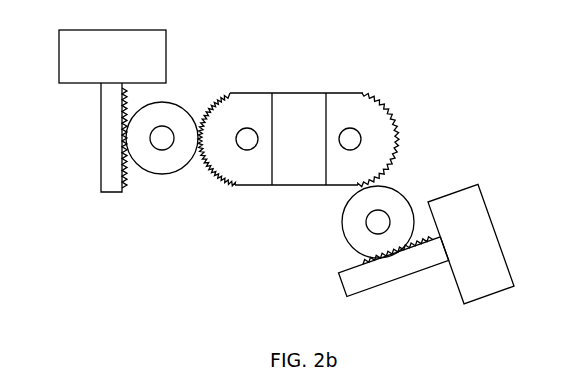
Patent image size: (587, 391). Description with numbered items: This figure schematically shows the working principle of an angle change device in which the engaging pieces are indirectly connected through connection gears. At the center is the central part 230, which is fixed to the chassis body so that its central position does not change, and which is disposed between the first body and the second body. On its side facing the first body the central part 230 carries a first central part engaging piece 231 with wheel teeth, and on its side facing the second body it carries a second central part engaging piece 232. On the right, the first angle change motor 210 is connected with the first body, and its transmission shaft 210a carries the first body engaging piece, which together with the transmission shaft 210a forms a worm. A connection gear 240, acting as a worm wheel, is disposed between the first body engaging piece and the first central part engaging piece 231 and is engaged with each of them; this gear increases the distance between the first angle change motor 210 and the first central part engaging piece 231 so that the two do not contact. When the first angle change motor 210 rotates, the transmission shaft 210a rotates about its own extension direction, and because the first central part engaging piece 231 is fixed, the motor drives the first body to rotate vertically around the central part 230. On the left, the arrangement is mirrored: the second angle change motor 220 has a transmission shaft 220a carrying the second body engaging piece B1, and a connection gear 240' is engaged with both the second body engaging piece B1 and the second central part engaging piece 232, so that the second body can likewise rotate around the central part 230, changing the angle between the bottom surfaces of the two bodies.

The first angle change motor 210 is at (506, 241).
The transmission shaft of the first angle change motor 210a is at (415, 280).
The second angle change motor 220 is at (140, 50).
The transmission shaft of the second angle change motor 220a is at (107, 148).
The central part 230 is at (320, 149).
The first central part engaging piece 231 is at (415, 115).
The second central part engaging piece 232 is at (218, 181).
The connection gear 240 is at (428, 177).
The connection gear 240' is at (186, 119).
The second body engaging piece B1 is at (128, 180).